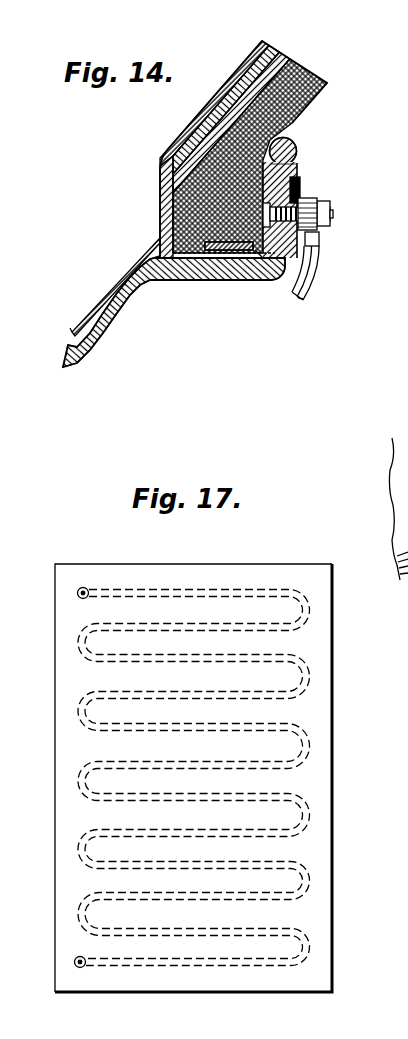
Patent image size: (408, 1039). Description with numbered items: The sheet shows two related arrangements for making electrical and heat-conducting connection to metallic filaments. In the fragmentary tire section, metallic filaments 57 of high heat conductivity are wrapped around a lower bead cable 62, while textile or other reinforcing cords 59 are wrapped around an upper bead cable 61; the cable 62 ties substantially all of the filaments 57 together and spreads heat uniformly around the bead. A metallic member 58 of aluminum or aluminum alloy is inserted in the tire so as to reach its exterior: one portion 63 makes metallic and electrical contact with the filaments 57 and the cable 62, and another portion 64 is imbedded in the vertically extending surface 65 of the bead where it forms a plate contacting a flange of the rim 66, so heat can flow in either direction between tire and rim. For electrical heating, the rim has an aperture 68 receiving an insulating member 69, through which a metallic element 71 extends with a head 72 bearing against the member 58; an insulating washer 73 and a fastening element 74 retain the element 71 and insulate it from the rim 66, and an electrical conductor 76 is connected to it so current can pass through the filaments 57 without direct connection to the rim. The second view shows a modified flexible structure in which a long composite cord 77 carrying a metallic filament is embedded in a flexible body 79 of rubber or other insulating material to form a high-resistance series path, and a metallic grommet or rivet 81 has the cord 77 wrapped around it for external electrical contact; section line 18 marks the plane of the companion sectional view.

In FIG. 14, the metallic filaments 57 is at (323, 75).
In FIG. 14, the metallic member 58 is at (235, 258).
In FIG. 14, the reinforcing cords 59 is at (220, 101).
In FIG. 14, the upper bead cable 61 is at (186, 138).
In FIG. 14, the lower bead cable 62 is at (156, 223).
In FIG. 14, the portion of metallic member 63 is at (211, 260).
In FIG. 14, the portion of metallic member 64 is at (265, 262).
In FIG. 14, the vertically extending surface of bead 65 is at (298, 159).
In FIG. 14, the rim 66 is at (296, 142).
In FIG. 14, the aperture 68 is at (280, 260).
In FIG. 14, the insulating member 69 is at (295, 172).
In FIG. 14, the metallic element 71 is at (333, 215).
In FIG. 14, the head 72 is at (300, 190).
In FIG. 14, the insulating washer 73 is at (313, 251).
In FIG. 14, the fastening element 74 is at (320, 233).
In FIG. 14, the electrical conductor 76 is at (301, 298).
In FIG. 17, the cord 77 is at (80, 718).
In FIG. 17, the flexible body 79 is at (332, 716).
In FIG. 17, the metallic grommet 81 is at (86, 587).
In FIG. 17, the section line 18 is at (77, 591).